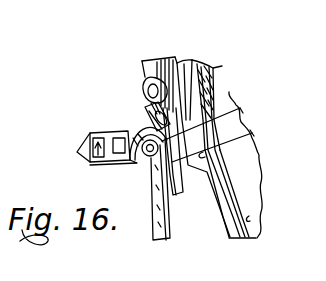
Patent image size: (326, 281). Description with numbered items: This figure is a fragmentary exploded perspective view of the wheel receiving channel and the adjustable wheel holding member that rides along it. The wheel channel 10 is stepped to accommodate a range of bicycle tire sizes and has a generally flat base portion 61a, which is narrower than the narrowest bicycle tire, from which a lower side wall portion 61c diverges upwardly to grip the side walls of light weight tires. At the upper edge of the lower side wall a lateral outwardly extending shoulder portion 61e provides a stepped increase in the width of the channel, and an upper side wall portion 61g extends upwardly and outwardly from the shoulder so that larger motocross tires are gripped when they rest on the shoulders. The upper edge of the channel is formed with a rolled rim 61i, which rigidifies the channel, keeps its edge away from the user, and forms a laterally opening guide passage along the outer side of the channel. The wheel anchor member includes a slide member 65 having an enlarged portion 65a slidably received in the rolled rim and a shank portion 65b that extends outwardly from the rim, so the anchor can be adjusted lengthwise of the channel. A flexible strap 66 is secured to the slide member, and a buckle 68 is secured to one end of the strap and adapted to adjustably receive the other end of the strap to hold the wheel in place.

The wheel channel 10 is at (233, 91).
The base portion 61a is at (260, 238).
The lower side wall portion 61c is at (219, 208).
The shoulder portion 61e is at (254, 141).
The upper side wall portion 61g is at (180, 62).
The rolled rim 61i is at (147, 80).
The slide member 65 is at (231, 92).
The enlarged portion 65a is at (149, 112).
The shank portion 65b is at (241, 108).
The flexible strap 66 is at (152, 216).
The buckle 68 is at (118, 132).